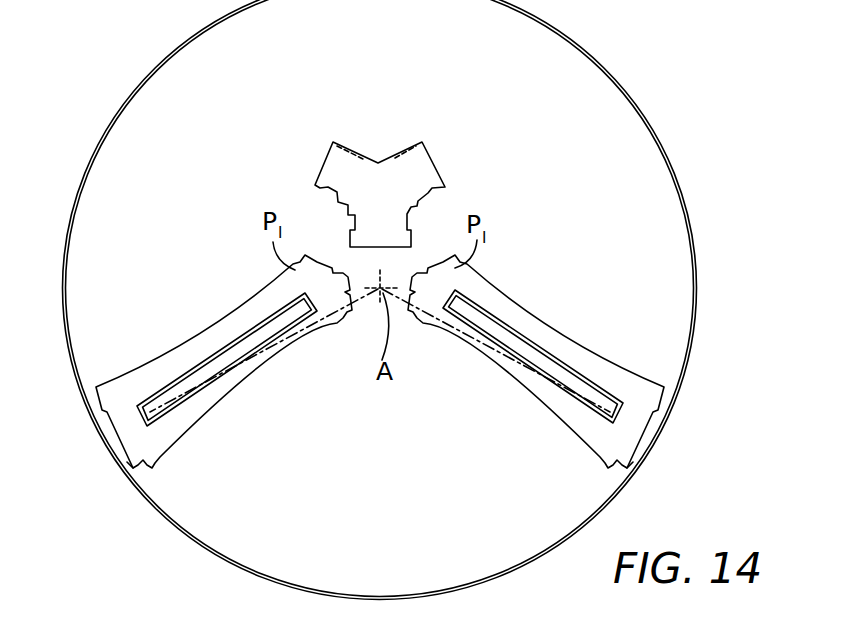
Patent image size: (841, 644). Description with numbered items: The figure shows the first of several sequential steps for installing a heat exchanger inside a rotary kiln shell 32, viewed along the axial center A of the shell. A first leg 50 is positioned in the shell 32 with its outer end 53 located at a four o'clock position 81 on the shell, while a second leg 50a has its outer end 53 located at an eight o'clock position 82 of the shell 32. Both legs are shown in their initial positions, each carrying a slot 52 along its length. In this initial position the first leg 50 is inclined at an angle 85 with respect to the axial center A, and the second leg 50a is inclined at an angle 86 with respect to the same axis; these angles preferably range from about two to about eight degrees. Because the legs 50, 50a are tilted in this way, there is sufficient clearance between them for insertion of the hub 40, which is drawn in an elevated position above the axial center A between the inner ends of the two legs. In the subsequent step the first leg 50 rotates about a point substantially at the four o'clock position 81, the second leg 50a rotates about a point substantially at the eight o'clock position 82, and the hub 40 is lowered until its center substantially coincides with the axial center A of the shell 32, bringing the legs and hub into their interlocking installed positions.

The rotary kiln shell 32 is at (667, 150).
The hub 40 is at (327, 168).
The first leg 50 is at (600, 362).
The second leg 50a is at (170, 362).
The slot 52 is at (473, 302).
The outer end 53 is at (162, 460).
The four o'clock position 81 is at (615, 413).
The eight o'clock position 82 is at (148, 423).
The angle 85 is at (453, 338).
The angle 86 is at (307, 338).